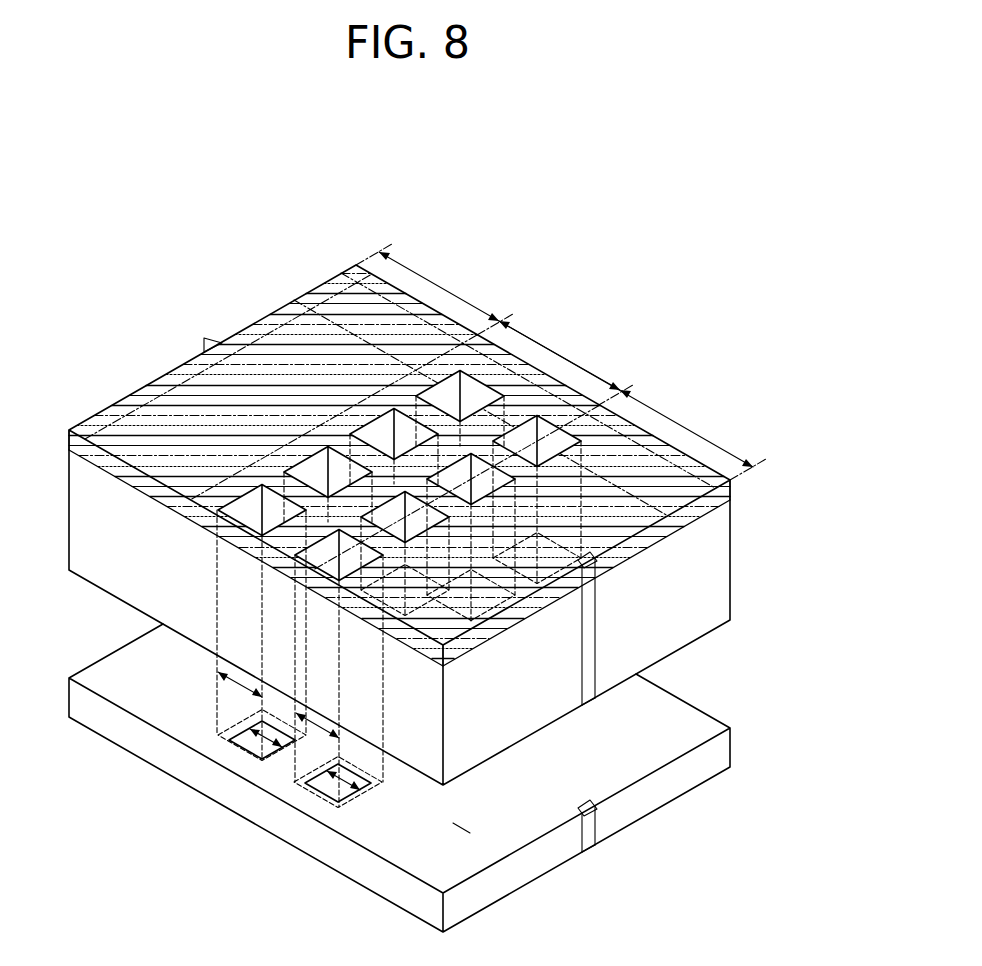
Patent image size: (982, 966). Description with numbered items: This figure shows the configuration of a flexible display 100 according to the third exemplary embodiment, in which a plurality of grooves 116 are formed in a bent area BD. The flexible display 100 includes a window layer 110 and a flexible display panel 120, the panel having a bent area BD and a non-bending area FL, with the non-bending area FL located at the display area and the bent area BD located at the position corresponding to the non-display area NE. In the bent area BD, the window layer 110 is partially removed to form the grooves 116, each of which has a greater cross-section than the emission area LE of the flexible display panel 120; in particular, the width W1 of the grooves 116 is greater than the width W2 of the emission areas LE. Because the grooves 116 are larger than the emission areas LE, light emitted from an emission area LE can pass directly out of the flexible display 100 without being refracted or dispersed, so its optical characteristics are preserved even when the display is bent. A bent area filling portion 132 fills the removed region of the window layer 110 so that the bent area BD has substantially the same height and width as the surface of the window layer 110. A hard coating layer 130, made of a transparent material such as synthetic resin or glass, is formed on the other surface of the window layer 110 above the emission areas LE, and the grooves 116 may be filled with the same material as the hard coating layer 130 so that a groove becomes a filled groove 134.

The flexible display 100 is at (313, 212).
The window layer 110 is at (706, 583).
The grooves 116 is at (385, 418).
The flexible display panel 120 is at (703, 727).
The hard coating layer 130 is at (704, 514).
The bent area filling portion 132 is at (538, 417).
The filled groove 134 is at (456, 392).
The non-bending area FL is at (561, 362).
The bent area BD is at (559, 355).
The width of the grooves W1 is at (396, 712).
The width of the emission areas W2 is at (257, 736).
The emission area LE is at (237, 723).
The non-display area NE is at (453, 823).